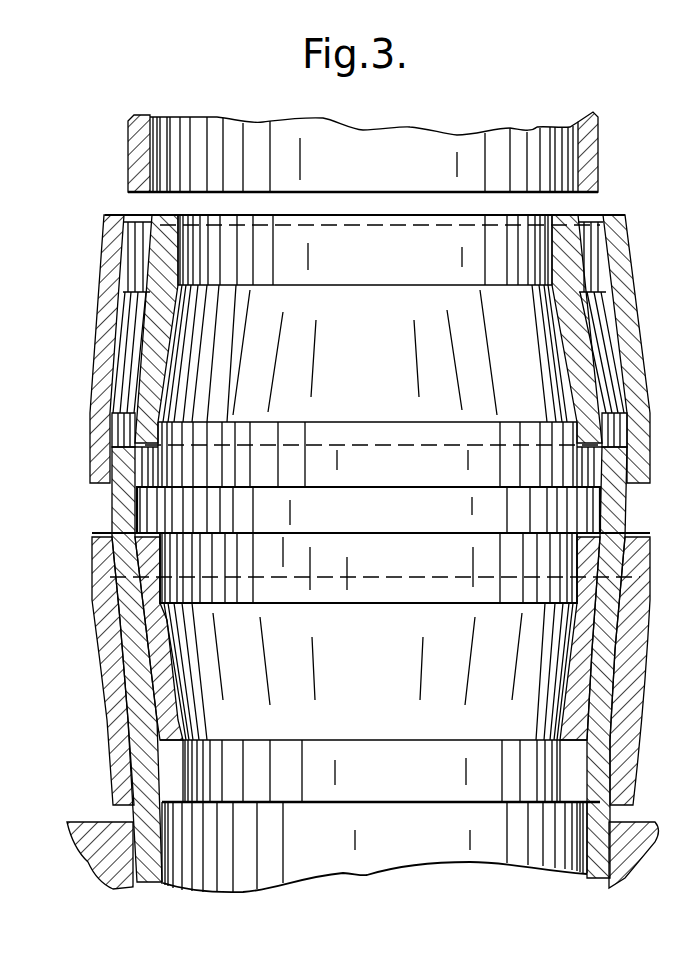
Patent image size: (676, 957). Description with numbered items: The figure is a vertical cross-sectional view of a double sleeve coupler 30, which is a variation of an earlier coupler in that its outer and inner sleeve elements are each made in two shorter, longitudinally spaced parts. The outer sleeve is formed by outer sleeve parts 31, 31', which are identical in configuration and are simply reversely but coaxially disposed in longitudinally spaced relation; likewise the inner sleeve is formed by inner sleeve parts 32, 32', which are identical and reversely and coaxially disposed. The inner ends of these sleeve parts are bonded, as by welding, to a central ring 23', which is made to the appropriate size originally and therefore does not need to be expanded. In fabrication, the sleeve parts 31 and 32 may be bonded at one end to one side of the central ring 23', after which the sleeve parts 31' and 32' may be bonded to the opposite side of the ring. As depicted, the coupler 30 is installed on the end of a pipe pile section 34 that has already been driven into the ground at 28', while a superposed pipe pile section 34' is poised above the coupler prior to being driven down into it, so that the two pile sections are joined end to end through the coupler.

The superposed pipe pile section 34' is at (328, 152).
The coupler 30 is at (120, 215).
The outer sleeve part 31 is at (98, 349).
The inner sleeve part 32 is at (605, 327).
The central ring 23' is at (320, 500).
The inner sleeve part 32' is at (641, 649).
The outer sleeve part 31' is at (84, 670).
The ground 28' is at (348, 831).
The pipe pile section 34 is at (356, 688).